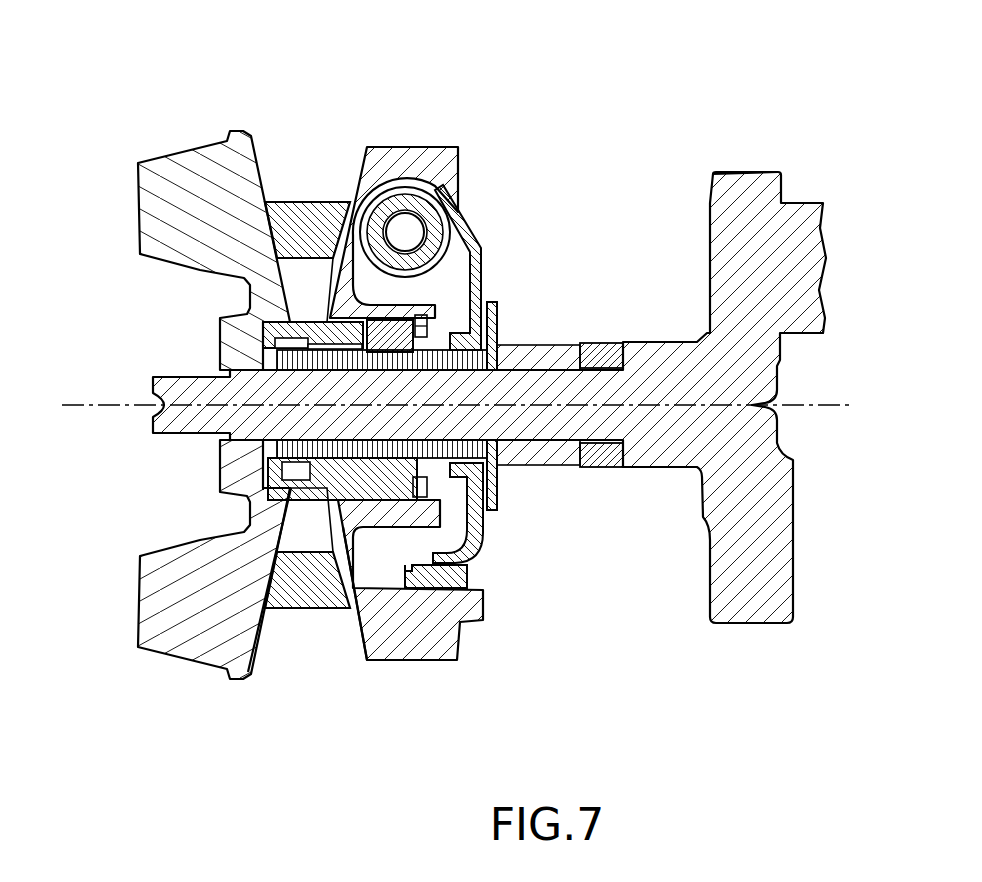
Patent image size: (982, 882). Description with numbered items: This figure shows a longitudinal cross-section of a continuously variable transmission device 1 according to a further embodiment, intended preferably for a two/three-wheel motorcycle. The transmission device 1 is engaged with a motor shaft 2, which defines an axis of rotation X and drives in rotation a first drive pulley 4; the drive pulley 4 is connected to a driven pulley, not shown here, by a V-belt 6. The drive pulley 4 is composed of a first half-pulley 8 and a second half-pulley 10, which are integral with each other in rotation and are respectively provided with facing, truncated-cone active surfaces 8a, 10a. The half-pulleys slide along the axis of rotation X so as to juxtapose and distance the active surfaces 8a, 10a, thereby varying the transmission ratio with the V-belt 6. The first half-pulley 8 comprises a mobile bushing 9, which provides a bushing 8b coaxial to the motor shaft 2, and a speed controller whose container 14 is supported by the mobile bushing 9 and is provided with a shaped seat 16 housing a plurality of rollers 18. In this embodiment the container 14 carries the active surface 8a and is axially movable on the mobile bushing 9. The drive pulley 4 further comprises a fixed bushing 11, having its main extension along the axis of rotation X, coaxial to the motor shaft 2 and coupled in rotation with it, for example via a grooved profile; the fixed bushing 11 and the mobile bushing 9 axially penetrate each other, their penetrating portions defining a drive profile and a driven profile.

The continuously variable transmission device 1 is at (778, 102).
The motor shaft 2 is at (758, 510).
The first drive pulley 4 is at (319, 740).
The V-belt 6 is at (300, 216).
The first half-pulley 8 is at (620, 724).
The active surface 8a is at (358, 638).
The bushing 8b is at (433, 337).
The mobile bushing 9 is at (390, 331).
The second half-pulley 10 is at (169, 680).
The active surface 10a is at (258, 660).
The fixed bushing 11 is at (318, 330).
The container 14 is at (447, 623).
The shaped seat 16 is at (421, 287).
The rollers 18 is at (424, 183).
The axis of rotation X is at (72, 402).